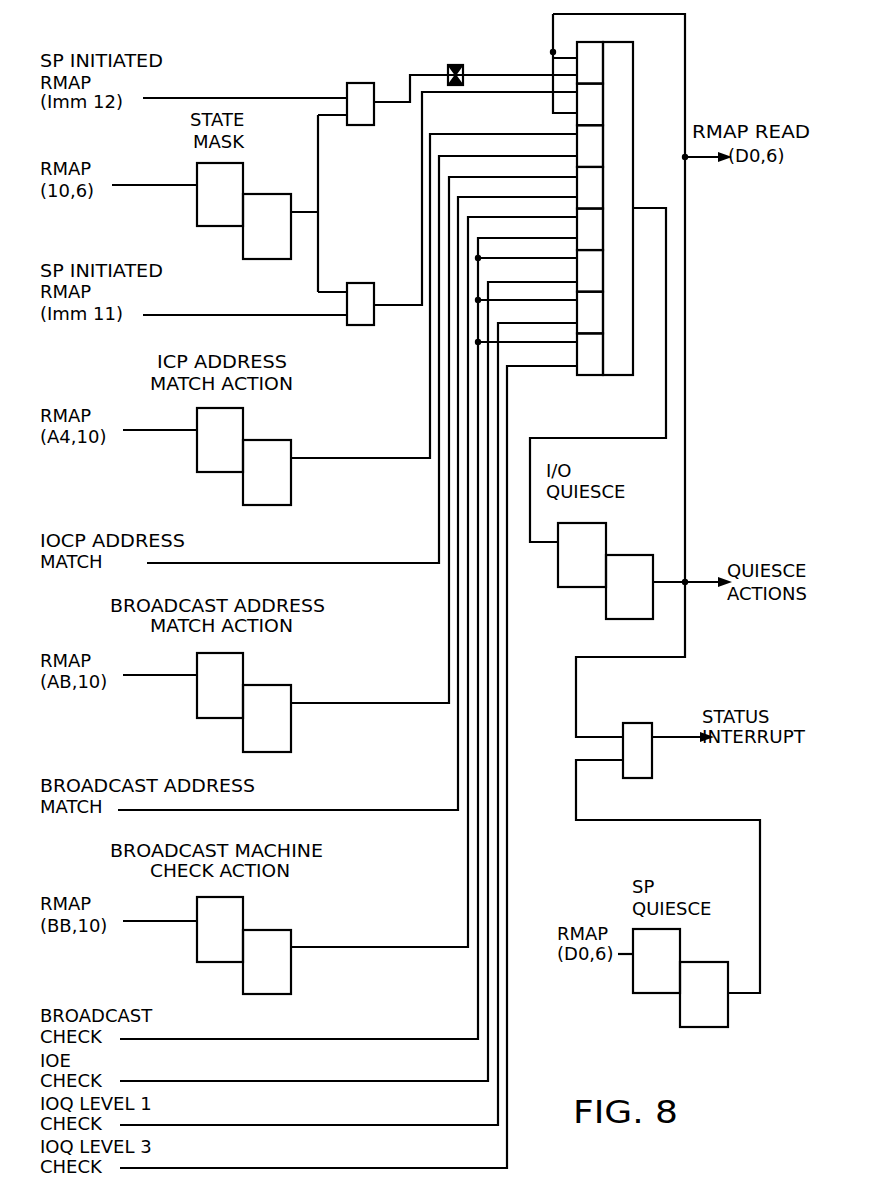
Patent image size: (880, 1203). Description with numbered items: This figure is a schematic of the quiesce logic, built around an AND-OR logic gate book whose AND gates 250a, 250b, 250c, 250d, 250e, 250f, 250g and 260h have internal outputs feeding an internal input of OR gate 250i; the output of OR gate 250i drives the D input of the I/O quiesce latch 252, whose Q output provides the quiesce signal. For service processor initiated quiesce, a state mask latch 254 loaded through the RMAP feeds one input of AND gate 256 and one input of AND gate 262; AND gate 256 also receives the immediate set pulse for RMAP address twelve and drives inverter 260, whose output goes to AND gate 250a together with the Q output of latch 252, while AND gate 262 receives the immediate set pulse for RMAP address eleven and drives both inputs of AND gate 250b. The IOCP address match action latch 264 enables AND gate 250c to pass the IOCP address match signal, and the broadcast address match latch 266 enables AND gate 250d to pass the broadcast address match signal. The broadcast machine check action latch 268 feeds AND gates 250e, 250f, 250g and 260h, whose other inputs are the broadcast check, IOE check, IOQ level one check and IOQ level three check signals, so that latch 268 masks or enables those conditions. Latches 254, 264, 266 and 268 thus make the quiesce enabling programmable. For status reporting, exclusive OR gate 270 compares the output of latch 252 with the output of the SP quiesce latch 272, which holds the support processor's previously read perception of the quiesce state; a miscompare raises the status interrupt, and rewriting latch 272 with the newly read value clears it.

The AND gate 250a is at (553, 52).
The AND gate 250b is at (577, 103).
The AND gate 250c is at (603, 140).
The AND gate 250d is at (603, 200).
The AND gate 250e is at (603, 236).
The AND gate 250f is at (603, 265).
The AND gate 250g is at (603, 313).
The AND gate of RMAP register array 260h is at (603, 350).
The OR gate 250i is at (628, 68).
The I/O quiesce latch 252 is at (632, 555).
The state mask latch 254 is at (243, 170).
The AND gate 256 is at (360, 83).
The inverter 260 is at (456, 65).
The AND gate 262 is at (357, 283).
The IOCP address match action latch 264 is at (278, 440).
The broadcast address match latch 266 is at (278, 685).
The broadcast machine check action latch 268 is at (278, 930).
The exclusive OR gate 270 is at (637, 723).
The SP quiesce latch 272 is at (728, 1018).